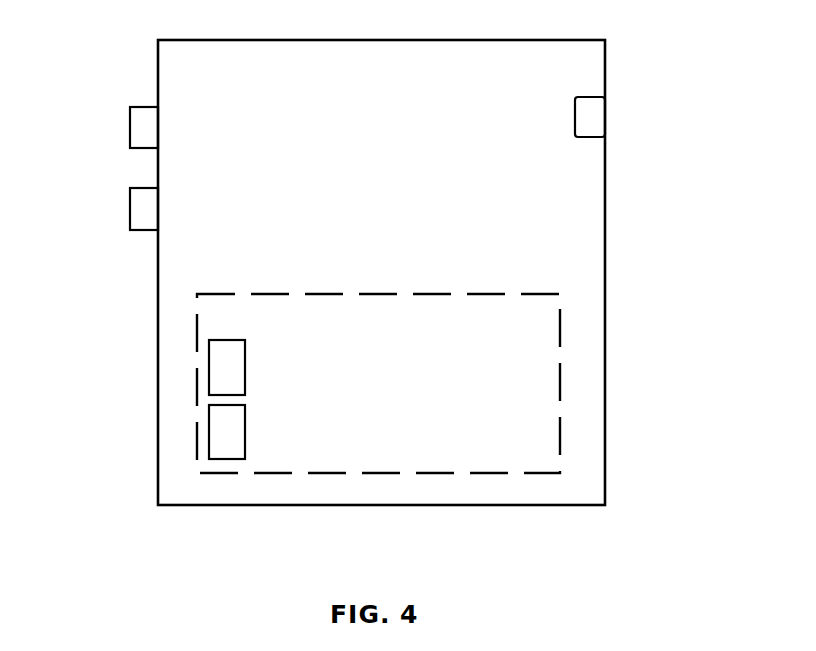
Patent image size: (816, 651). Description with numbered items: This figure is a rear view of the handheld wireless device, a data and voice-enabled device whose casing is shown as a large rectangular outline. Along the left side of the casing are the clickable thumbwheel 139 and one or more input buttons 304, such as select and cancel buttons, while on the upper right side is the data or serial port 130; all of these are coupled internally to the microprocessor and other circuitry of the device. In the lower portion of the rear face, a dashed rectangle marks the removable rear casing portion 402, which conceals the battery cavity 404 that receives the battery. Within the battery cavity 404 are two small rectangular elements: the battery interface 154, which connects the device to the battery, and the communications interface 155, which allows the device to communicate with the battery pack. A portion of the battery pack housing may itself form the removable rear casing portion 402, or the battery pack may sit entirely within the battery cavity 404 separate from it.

The data or serial port 130 is at (590, 117).
The clickable thumbwheel 139 is at (143, 128).
The input buttons 304 is at (143, 215).
The removable rear casing portion 402 is at (560, 348).
The battery cavity 404 is at (225, 309).
The battery interface 154 is at (223, 375).
The communications interface 155 is at (223, 438).